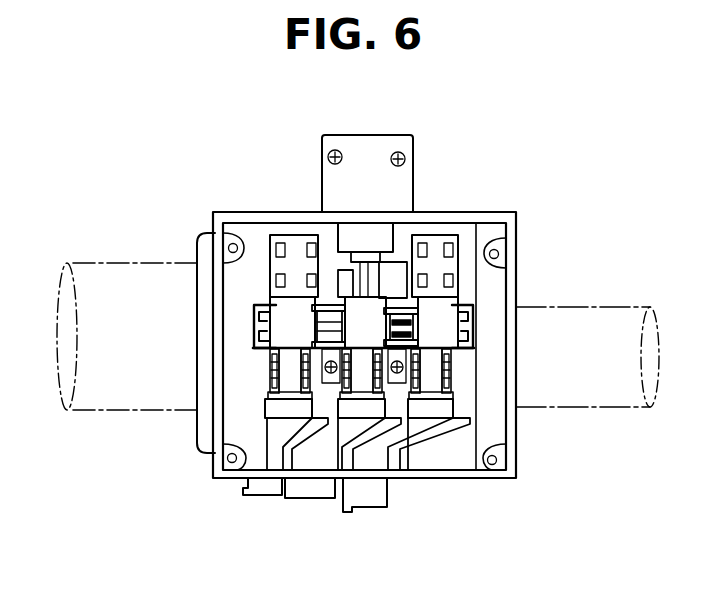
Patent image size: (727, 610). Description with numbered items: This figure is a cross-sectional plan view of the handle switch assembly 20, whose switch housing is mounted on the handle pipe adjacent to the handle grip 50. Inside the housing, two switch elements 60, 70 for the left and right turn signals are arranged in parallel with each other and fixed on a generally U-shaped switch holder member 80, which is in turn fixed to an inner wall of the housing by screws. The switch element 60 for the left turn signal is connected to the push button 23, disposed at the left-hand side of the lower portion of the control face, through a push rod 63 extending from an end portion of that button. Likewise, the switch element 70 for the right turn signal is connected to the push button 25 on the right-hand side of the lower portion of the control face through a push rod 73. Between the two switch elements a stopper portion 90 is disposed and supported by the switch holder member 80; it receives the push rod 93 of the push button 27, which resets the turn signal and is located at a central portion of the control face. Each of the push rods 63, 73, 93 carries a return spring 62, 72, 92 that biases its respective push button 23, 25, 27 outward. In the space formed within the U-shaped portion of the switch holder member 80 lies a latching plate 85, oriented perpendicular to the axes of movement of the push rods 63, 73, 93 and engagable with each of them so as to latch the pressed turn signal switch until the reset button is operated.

The handle switch assembly 20 is at (575, 407).
The push button 23 is at (258, 497).
The push button 25 is at (355, 507).
The push button 27 is at (300, 498).
The handle grip 50 is at (96, 263).
The switch element 60 is at (270, 275).
The return spring 62 is at (272, 375).
The push rod 63 is at (283, 385).
The switch element 70 is at (460, 278).
The return spring 72 is at (448, 383).
The push rod 73 is at (430, 387).
The switch holder member 80 is at (262, 356).
The latching plate 85 is at (473, 330).
The stopper portion 90 is at (357, 313).
The return spring 92 is at (382, 385).
The push rod 93 is at (360, 383).